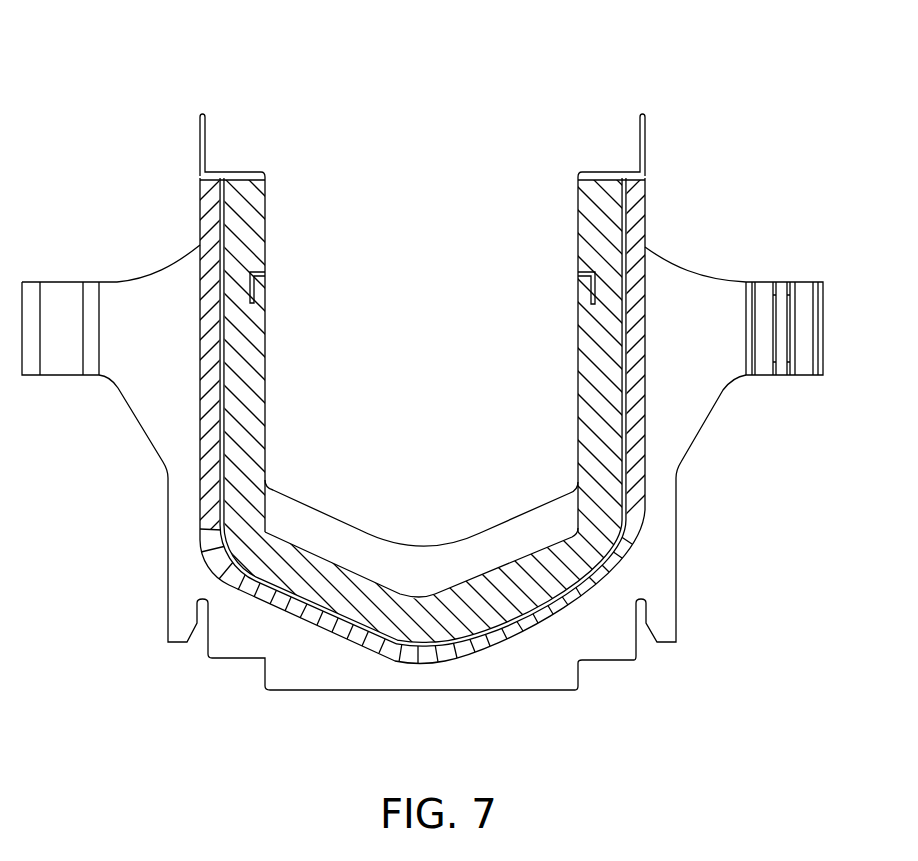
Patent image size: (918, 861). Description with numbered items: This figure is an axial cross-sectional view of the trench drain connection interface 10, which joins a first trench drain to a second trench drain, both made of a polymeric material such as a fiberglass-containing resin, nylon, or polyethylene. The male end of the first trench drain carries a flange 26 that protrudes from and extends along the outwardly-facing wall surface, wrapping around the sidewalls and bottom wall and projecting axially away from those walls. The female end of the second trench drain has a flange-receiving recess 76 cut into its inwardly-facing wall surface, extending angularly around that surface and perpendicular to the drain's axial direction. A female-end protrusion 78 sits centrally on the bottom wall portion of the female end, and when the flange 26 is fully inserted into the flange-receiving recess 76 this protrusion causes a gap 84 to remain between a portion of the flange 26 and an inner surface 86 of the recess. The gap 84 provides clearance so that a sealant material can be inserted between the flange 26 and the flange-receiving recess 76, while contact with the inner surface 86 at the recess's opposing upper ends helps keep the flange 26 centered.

The trench drain connection interface 10 is at (160, 48).
The flange 26 is at (617, 507).
The flange-receiving recess 76 is at (270, 590).
The female-end protrusion 78 is at (223, 183).
The gap 84 is at (423, 642).
The inner surface 86 is at (522, 613).